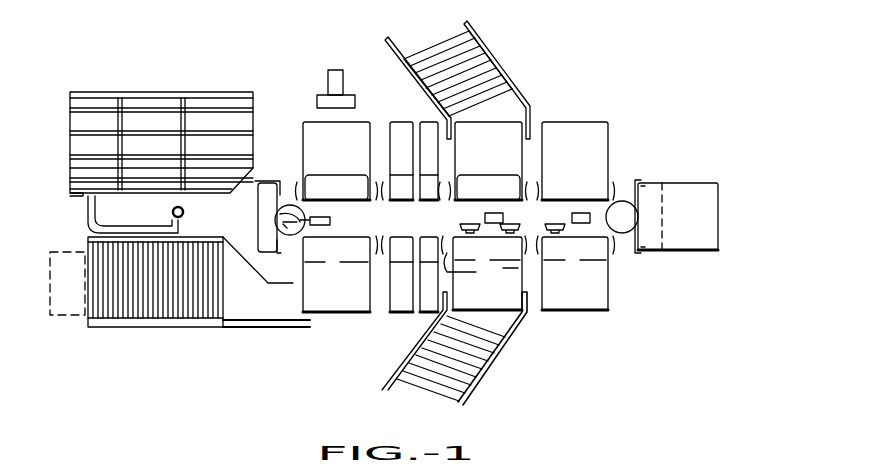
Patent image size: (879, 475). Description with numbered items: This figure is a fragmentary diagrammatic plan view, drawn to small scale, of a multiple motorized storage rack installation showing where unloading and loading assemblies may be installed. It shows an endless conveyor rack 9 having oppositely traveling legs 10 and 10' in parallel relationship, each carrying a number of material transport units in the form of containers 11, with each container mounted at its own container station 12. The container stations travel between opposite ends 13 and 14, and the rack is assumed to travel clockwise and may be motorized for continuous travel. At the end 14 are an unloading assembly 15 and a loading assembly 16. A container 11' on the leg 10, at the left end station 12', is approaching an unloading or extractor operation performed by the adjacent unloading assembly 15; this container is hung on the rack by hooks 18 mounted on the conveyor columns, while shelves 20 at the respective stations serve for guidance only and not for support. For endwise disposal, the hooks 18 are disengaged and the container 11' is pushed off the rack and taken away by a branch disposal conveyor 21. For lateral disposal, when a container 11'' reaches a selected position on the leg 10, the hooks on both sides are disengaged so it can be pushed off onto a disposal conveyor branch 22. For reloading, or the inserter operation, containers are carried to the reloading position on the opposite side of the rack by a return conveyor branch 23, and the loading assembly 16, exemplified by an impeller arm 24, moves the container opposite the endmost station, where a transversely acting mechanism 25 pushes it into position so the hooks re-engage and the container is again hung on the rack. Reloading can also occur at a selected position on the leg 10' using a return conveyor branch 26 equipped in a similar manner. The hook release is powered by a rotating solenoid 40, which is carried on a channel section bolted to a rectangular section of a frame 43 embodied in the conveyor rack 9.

The endless conveyor rack 9 is at (388, 108).
The leg 10 is at (359, 362).
The leg 10' is at (560, 109).
The container 11 is at (505, 201).
The container 11' is at (309, 344).
The container 11'' is at (542, 337).
The container station 12 is at (451, 217).
The left end station 12' is at (342, 298).
The end 13 is at (726, 280).
The end 14 is at (285, 113).
The unloading assembly 15 is at (180, 319).
The loading assembly 16 is at (150, 112).
The hook 18 is at (300, 258).
The shelf 20 is at (257, 180).
The branch disposal conveyor 21 is at (135, 303).
The disposal conveyor branch 22 is at (467, 372).
The return conveyor branch 23 is at (147, 108).
The impeller arm 24 is at (128, 209).
The transversely acting mechanism 25 is at (345, 90).
The return conveyor branch 26 is at (432, 44).
The rotating solenoid 40 is at (276, 218).
The frame 43 is at (328, 200).